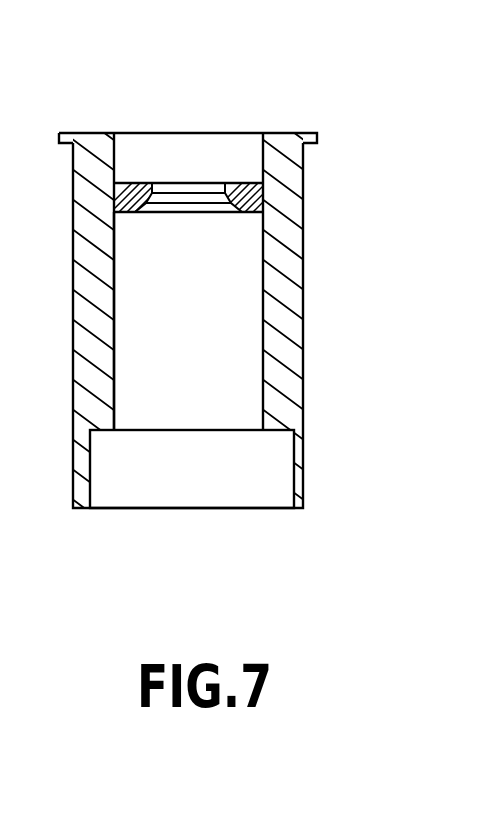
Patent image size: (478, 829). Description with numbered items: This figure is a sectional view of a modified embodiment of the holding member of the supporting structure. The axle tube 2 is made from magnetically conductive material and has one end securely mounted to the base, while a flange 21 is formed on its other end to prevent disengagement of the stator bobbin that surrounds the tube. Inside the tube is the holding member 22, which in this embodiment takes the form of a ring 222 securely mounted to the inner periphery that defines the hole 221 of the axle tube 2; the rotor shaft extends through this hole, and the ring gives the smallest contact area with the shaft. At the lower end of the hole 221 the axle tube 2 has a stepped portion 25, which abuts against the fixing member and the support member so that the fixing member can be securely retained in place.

The axle tube 2 is at (290, 262).
The flange 21 is at (318, 135).
The holding member 22 is at (245, 186).
The ring 222 is at (150, 190).
The hole 221 is at (118, 370).
The stepped portion 25 is at (108, 432).